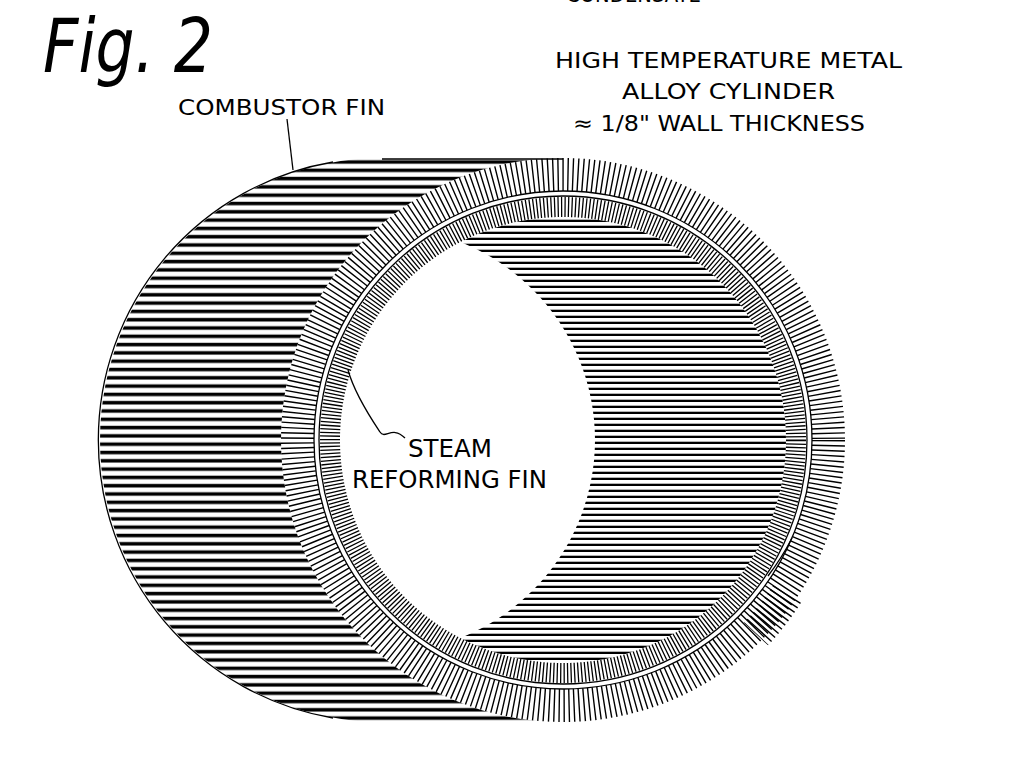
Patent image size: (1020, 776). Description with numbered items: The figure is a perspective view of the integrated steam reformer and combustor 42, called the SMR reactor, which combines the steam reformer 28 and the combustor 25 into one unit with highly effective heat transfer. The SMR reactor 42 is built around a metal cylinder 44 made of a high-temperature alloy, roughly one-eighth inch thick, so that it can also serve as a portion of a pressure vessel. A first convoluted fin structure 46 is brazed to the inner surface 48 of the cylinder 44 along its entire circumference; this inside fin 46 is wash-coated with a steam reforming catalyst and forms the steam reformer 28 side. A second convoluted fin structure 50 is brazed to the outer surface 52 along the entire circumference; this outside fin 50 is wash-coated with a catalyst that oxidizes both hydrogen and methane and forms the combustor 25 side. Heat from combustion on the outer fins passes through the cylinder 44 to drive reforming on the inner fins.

The combustor 25 is at (197, 226).
The integrated steam reformer and combustor 42 is at (137, 290).
The outer surface 52 is at (489, 165).
The second convoluted fin structure 50 is at (794, 280).
The metal cylinder 44 is at (727, 248).
The steam reformer 28 is at (565, 345).
The inner surface 48 is at (782, 556).
The first convoluted fin structure 46 is at (764, 596).